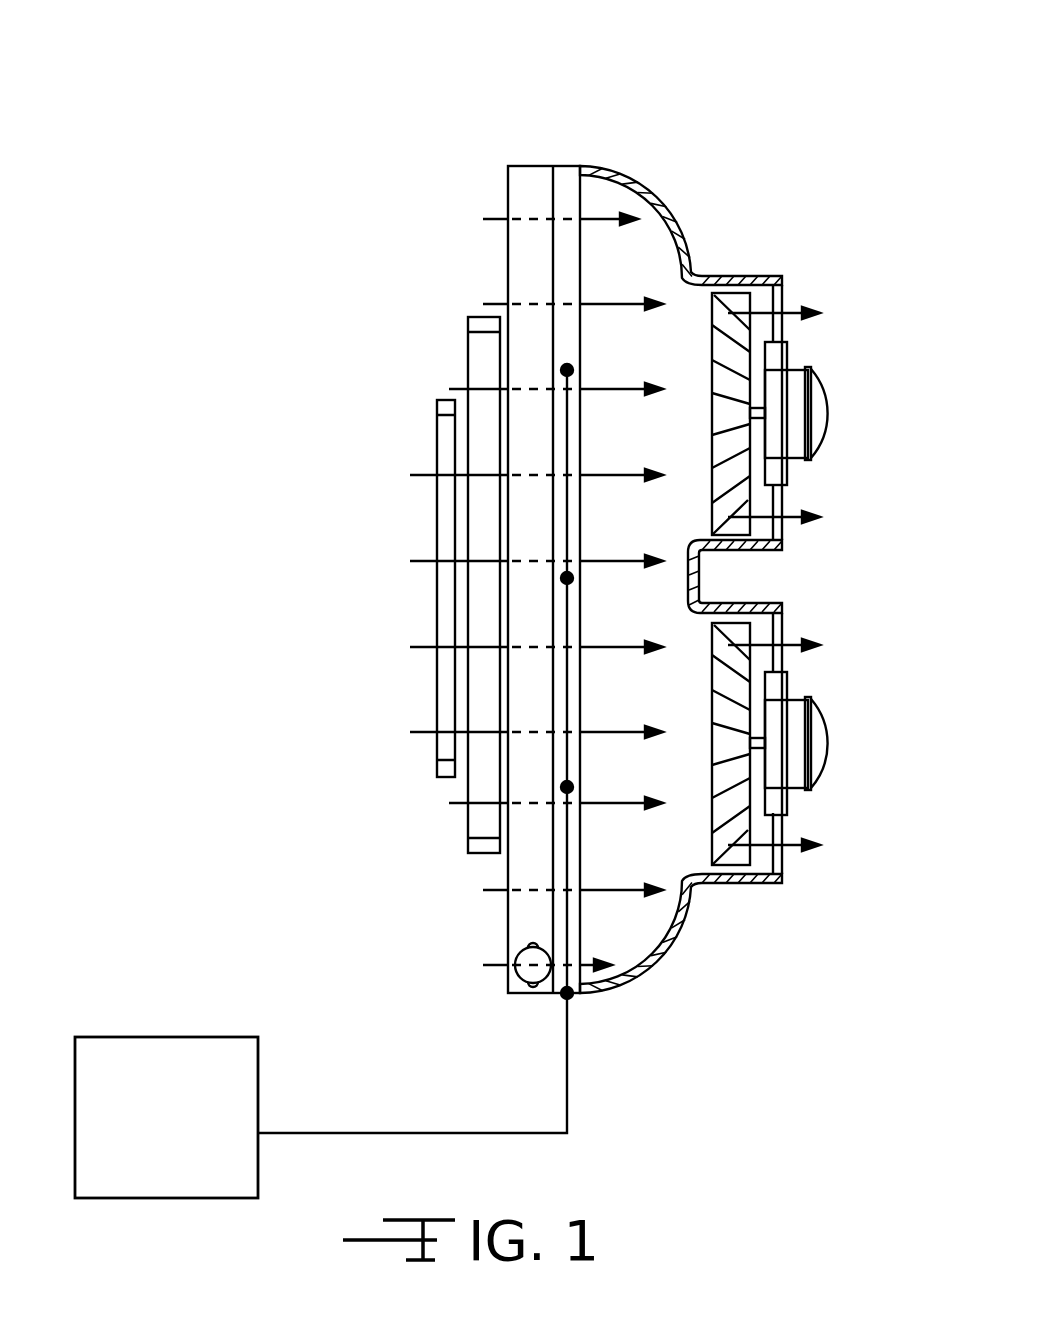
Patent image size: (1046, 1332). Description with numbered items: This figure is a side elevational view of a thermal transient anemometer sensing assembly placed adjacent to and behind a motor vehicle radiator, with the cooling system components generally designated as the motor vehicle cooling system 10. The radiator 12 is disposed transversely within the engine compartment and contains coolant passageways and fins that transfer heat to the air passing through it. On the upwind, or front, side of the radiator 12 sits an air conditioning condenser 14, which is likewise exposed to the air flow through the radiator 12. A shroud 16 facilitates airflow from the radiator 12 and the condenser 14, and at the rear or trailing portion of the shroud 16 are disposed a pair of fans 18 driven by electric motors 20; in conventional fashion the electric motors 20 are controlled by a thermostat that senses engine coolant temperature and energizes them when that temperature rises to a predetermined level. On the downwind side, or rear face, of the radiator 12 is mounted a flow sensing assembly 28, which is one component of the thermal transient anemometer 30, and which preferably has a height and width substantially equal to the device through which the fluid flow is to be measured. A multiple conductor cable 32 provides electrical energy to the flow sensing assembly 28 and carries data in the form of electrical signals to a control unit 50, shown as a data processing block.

The motor vehicle cooling system 10 is at (452, 100).
The radiator 12 is at (520, 188).
The air conditioning condenser 14 is at (478, 347).
The shroud 16 is at (653, 966).
The fan 18 is at (722, 415).
The electric motor 20 is at (797, 408).
The flow sensing assembly 28 is at (606, 190).
The thermal transient anemometer 30 is at (704, 1096).
The multiple conductor cable 32 is at (570, 1118).
The control unit 50 is at (175, 1025).